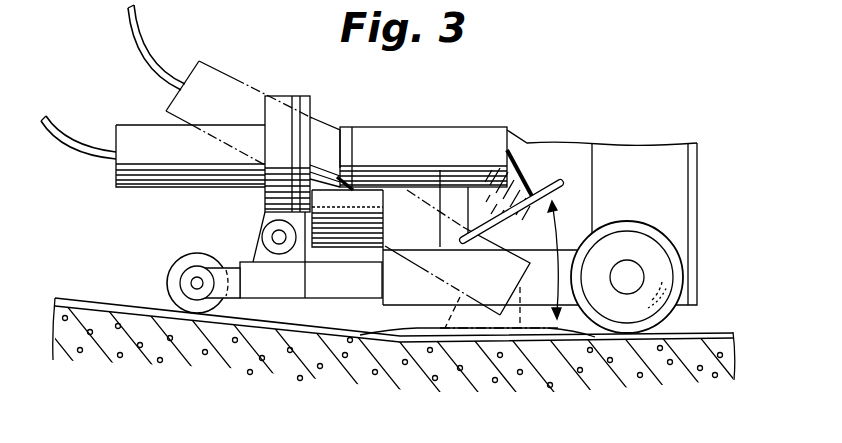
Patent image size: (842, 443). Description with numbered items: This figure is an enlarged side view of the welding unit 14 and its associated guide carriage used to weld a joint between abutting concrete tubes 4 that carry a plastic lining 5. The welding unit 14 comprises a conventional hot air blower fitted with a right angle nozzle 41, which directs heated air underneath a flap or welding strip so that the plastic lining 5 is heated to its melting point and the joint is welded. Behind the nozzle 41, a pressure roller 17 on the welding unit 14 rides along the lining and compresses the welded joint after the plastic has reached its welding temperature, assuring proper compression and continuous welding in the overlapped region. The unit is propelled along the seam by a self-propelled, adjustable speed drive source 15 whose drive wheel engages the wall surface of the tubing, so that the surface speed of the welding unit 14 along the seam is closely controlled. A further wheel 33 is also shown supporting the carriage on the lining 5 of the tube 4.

The tube 4 is at (230, 367).
The plastic lining 5 is at (124, 303).
The welding unit 14 is at (445, 160).
The drive source 15 is at (348, 226).
The pressure roller 17 is at (628, 243).
The front wheel 33 is at (183, 258).
The right angle nozzle 41 is at (542, 180).